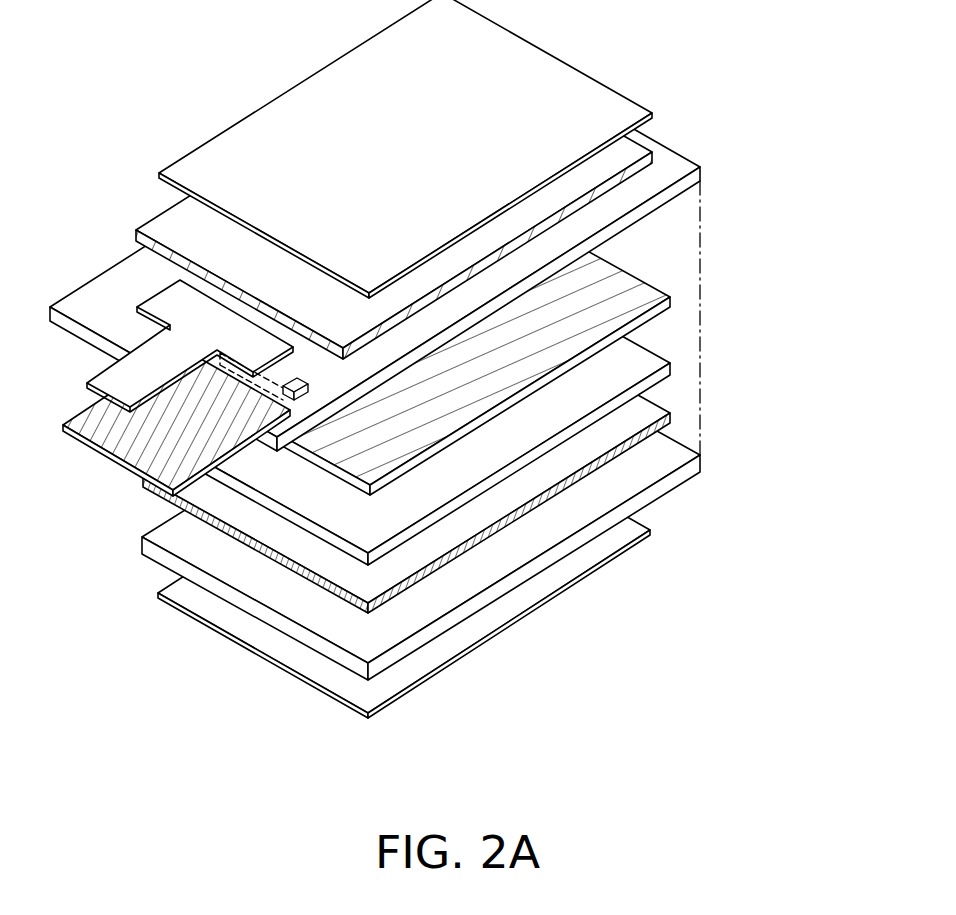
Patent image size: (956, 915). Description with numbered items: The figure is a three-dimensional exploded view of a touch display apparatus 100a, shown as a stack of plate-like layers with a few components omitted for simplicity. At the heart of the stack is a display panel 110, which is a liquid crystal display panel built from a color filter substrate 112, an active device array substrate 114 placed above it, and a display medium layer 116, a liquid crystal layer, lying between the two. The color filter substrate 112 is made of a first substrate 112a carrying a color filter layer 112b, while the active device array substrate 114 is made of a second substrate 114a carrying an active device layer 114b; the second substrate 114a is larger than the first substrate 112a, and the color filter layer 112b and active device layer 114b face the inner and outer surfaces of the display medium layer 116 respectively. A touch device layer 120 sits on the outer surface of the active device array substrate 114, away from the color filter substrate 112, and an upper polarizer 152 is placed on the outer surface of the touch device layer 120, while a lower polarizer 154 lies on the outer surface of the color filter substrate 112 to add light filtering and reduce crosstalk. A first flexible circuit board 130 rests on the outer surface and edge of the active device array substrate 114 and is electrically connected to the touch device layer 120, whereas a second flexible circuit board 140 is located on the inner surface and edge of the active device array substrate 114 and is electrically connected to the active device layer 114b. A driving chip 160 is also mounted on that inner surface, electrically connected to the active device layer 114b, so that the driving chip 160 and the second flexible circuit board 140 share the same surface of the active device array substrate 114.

The touch display apparatus 100a is at (448, 369).
The display panel 110 is at (463, 358).
The color filter substrate 112 is at (485, 483).
The first substrate 112a is at (660, 467).
The color filter layer 112b is at (626, 418).
The active device array substrate 114 is at (435, 266).
The second substrate 114a is at (641, 200).
The active device layer 114b is at (620, 297).
The display medium layer 116 is at (628, 360).
The touch device layer 120 is at (618, 160).
The first flexible circuit board 130 is at (143, 356).
The second flexible circuit board 140 is at (130, 447).
The upper polarizer 152 is at (616, 113).
The lower polarizer 154 is at (640, 524).
The driving chip 160 is at (130, 473).